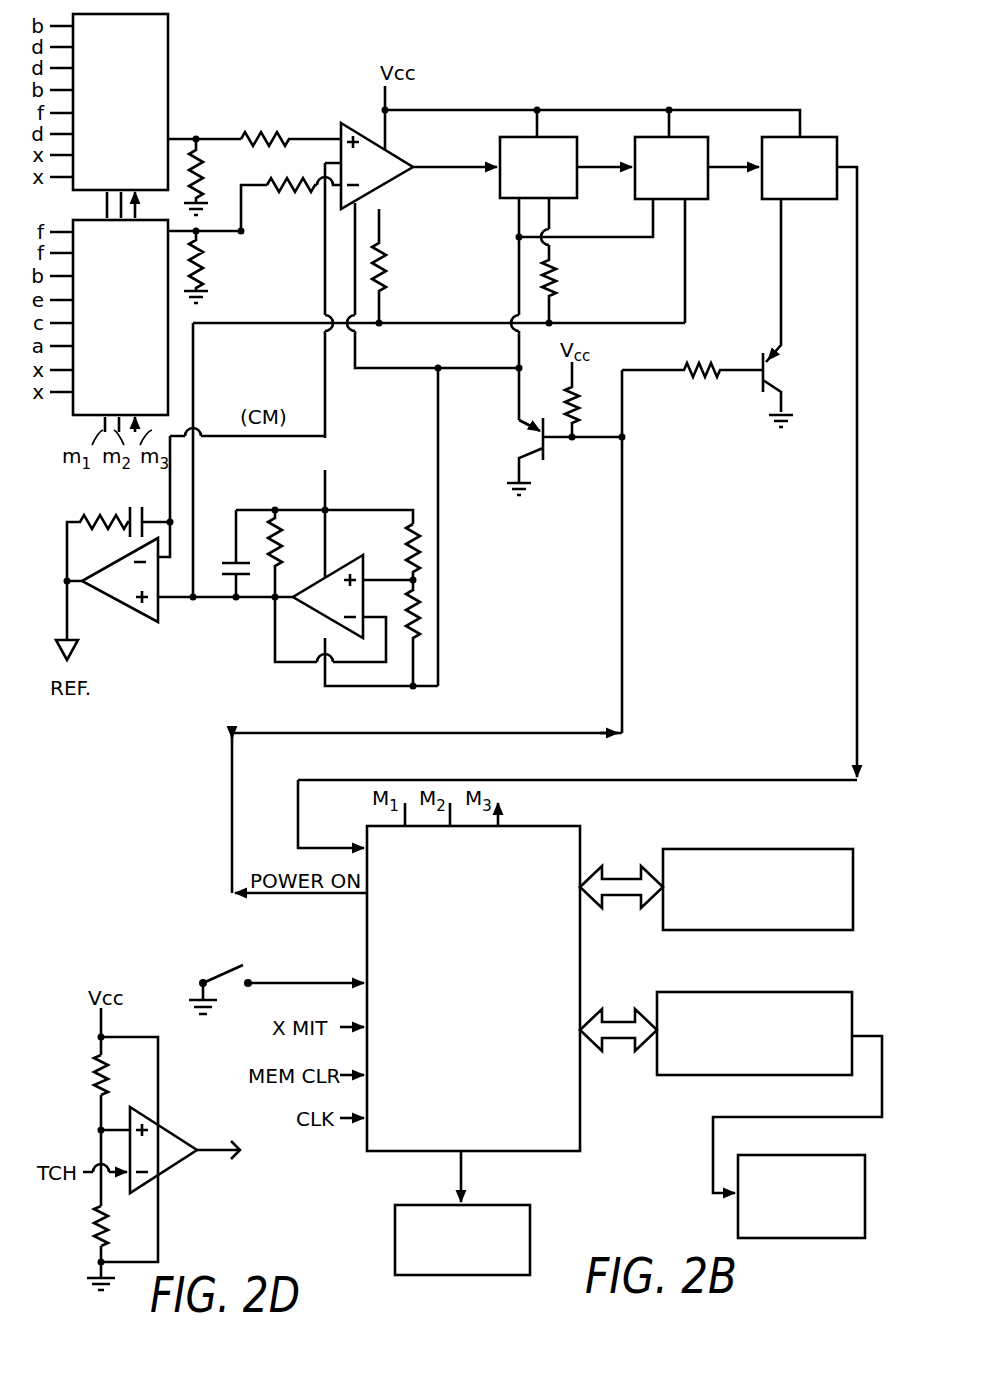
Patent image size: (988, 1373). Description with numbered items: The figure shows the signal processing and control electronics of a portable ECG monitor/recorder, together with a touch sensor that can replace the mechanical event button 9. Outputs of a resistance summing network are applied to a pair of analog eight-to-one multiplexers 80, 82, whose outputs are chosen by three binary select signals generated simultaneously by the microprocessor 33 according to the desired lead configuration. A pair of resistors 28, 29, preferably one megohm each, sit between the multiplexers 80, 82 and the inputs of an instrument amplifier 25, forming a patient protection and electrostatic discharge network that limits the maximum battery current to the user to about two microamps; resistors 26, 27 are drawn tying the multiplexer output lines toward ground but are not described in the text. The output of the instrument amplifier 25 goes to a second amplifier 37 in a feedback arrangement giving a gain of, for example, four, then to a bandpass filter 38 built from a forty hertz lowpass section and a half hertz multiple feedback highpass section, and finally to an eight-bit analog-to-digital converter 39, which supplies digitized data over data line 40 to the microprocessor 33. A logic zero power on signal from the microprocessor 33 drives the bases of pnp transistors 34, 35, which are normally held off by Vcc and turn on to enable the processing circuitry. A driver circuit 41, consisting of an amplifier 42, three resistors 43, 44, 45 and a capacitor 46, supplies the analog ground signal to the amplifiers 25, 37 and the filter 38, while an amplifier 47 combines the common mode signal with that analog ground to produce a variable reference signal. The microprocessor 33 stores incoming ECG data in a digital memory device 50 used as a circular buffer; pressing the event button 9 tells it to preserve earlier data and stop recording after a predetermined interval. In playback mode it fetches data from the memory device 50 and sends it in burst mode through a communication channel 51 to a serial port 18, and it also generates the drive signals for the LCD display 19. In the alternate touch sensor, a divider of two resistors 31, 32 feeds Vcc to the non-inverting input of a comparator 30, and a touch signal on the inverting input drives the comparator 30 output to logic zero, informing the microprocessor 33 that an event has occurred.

In FIG. 2B, the analog multiplexer 80 is at (108, 78).
In FIG. 2B, the analog multiplexer 82 is at (108, 309).
In FIG. 2B, the instrument amplifier 25 is at (364, 125).
In FIG. 2B, the resistor 26 is at (204, 180).
In FIG. 2B, the resistor 27 is at (204, 262).
In FIG. 2B, the resistor 28 is at (266, 133).
In FIG. 2B, the resistor 29 is at (267, 183).
In FIG. 2B, the second amplifier 37 is at (497, 142).
In FIG. 2B, the bandpass filter 38 is at (636, 137).
In FIG. 2B, the analog-to-digital converter 39 is at (762, 141).
In FIG. 2B, the data line 40 is at (857, 582).
In FIG. 2B, the pnp transistor 34 is at (548, 454).
In FIG. 2B, the pnp transistor 35 is at (760, 381).
In FIG. 2B, the driver circuit 41 is at (317, 567).
In FIG. 2B, the amplifier 42 is at (315, 608).
In FIG. 2B, the resistor 43 is at (408, 548).
In FIG. 2B, the resistor 44 is at (410, 628).
In FIG. 2B, the resistor 45 is at (281, 558).
In FIG. 2B, the capacitor 46 is at (231, 565).
In FIG. 2B, the amplifier 47 is at (126, 605).
In FIG. 2B, the microprocessor 33 is at (459, 1026).
In FIG. 2B, the event button 9 is at (222, 958).
In FIG. 2B, the digital memory device 50 is at (786, 849).
In FIG. 2B, the communication channel 51 is at (791, 992).
In FIG. 2B, the serial port 18 is at (822, 1238).
In FIG. 2B, the LCD display 19 is at (395, 1232).
In FIG. 2D, the comparator 30 is at (185, 1165).
In FIG. 2D, the resistor 31 is at (95, 1074).
In FIG. 2D, the resistor 32 is at (95, 1227).